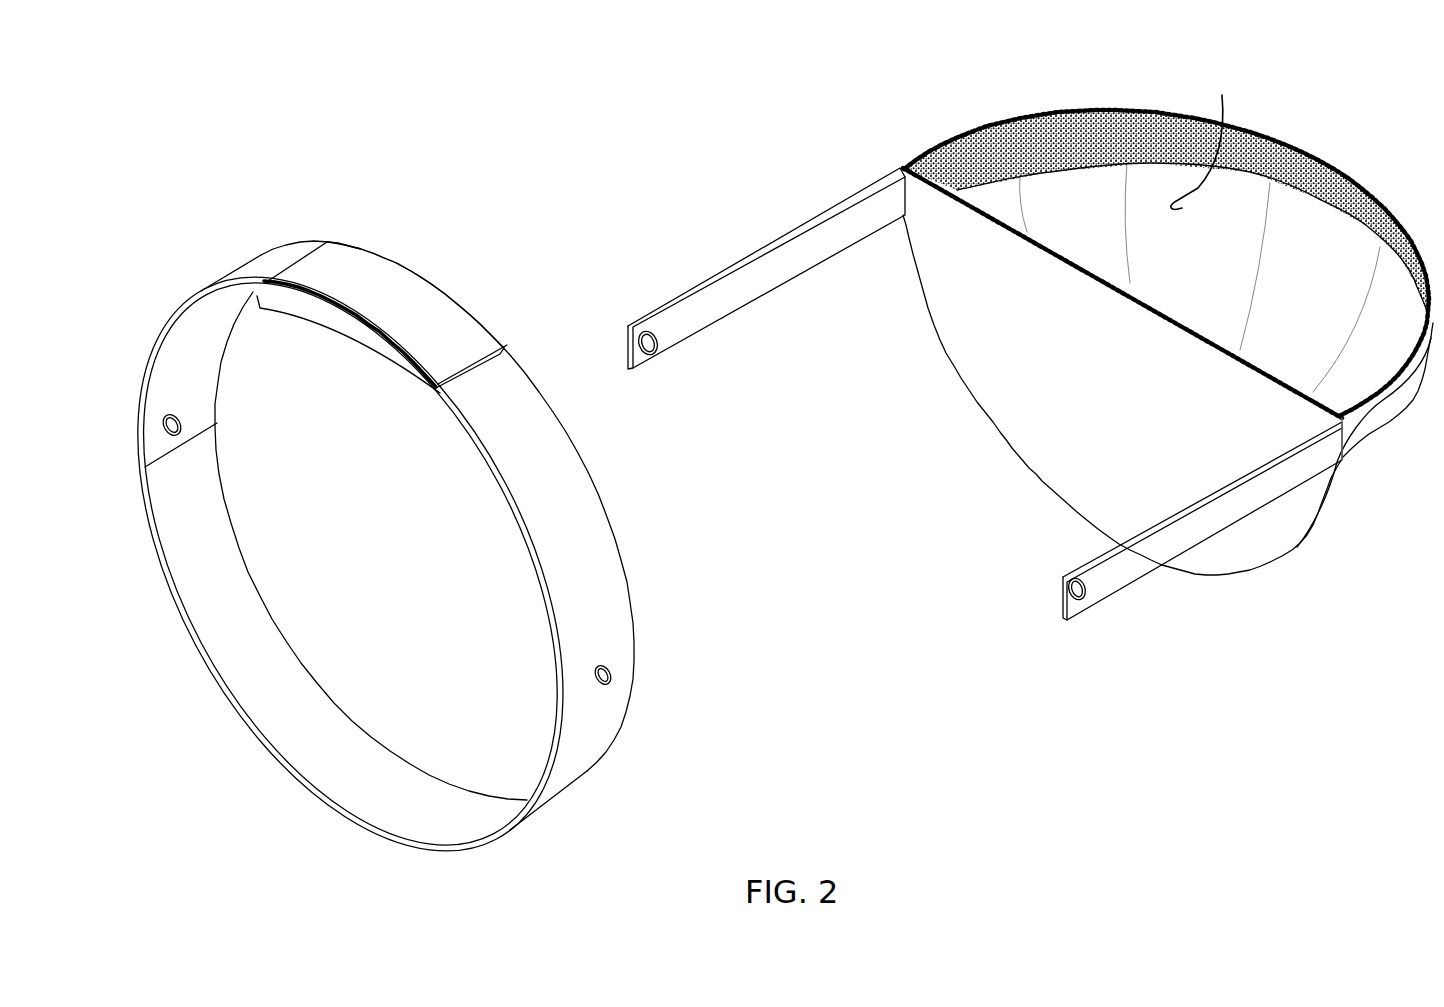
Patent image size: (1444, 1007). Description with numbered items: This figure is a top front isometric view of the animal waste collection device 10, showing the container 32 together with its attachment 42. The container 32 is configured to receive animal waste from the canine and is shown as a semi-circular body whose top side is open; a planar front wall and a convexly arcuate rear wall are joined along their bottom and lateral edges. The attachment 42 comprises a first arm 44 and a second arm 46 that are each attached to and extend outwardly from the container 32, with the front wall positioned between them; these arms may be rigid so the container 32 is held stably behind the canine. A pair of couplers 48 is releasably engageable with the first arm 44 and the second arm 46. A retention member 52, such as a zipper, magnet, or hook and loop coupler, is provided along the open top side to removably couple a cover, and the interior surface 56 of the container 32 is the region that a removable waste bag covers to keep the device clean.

The animal waste collection device 10 is at (162, 243).
The container 32 is at (1262, 574).
The attachment 42 is at (656, 266).
The first arm 44 is at (808, 225).
The second arm 46 is at (1141, 586).
The couplers 48 is at (170, 434).
The retention member 52 is at (1308, 150).
The interior surface 56 is at (1206, 137).